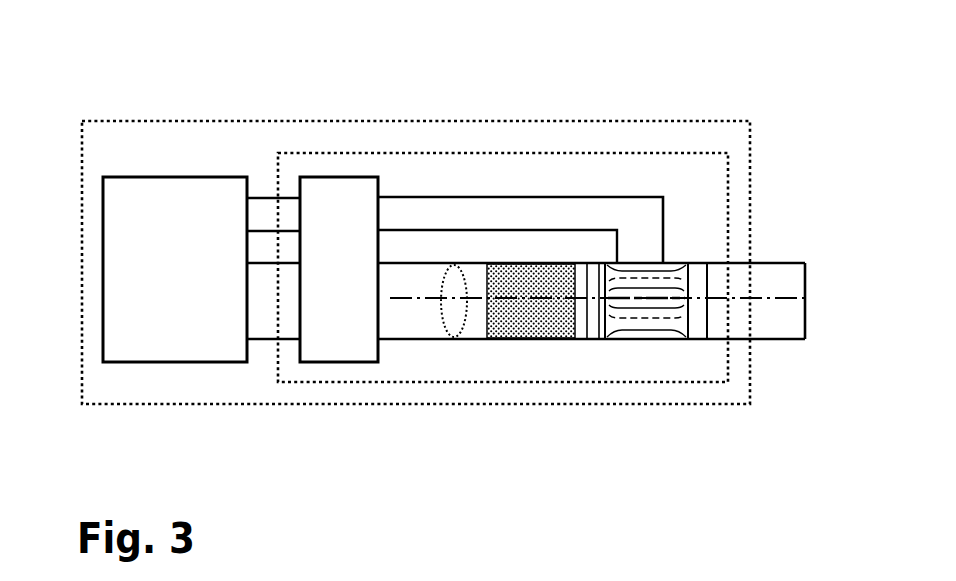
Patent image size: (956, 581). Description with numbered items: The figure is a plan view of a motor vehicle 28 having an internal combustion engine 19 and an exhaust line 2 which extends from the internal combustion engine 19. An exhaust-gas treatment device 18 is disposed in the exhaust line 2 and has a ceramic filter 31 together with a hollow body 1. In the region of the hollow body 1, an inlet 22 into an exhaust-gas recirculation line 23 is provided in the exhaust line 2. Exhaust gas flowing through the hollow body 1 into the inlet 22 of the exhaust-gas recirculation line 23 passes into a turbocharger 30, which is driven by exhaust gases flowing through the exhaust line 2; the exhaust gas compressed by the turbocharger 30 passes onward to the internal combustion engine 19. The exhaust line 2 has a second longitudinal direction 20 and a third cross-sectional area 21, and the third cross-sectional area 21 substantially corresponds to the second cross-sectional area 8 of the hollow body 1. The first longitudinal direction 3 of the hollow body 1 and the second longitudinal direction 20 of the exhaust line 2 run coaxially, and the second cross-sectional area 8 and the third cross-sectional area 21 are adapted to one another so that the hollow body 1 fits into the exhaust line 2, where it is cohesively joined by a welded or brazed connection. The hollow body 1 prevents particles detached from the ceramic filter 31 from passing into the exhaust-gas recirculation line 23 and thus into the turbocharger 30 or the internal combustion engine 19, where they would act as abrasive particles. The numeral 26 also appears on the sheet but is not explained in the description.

The hollow body 1 is at (700, 258).
The exhaust line 2 is at (475, 338).
The first longitudinal direction 3 is at (725, 340).
The second cross-sectional area 8 is at (707, 338).
The exhaust-gas treatment device 18 is at (532, 153).
The internal combustion engine 19 is at (235, 176).
The second longitudinal direction 20 is at (413, 297).
The third cross-sectional area 21 is at (455, 272).
The inlet 22 is at (640, 262).
The exhaust-gas recirculation line 23 is at (618, 197).
The reference 26 is at (569, 565).
The motor vehicle 28 is at (147, 120).
The turbocharger 30 is at (357, 176).
The ceramic filter 31 is at (542, 338).